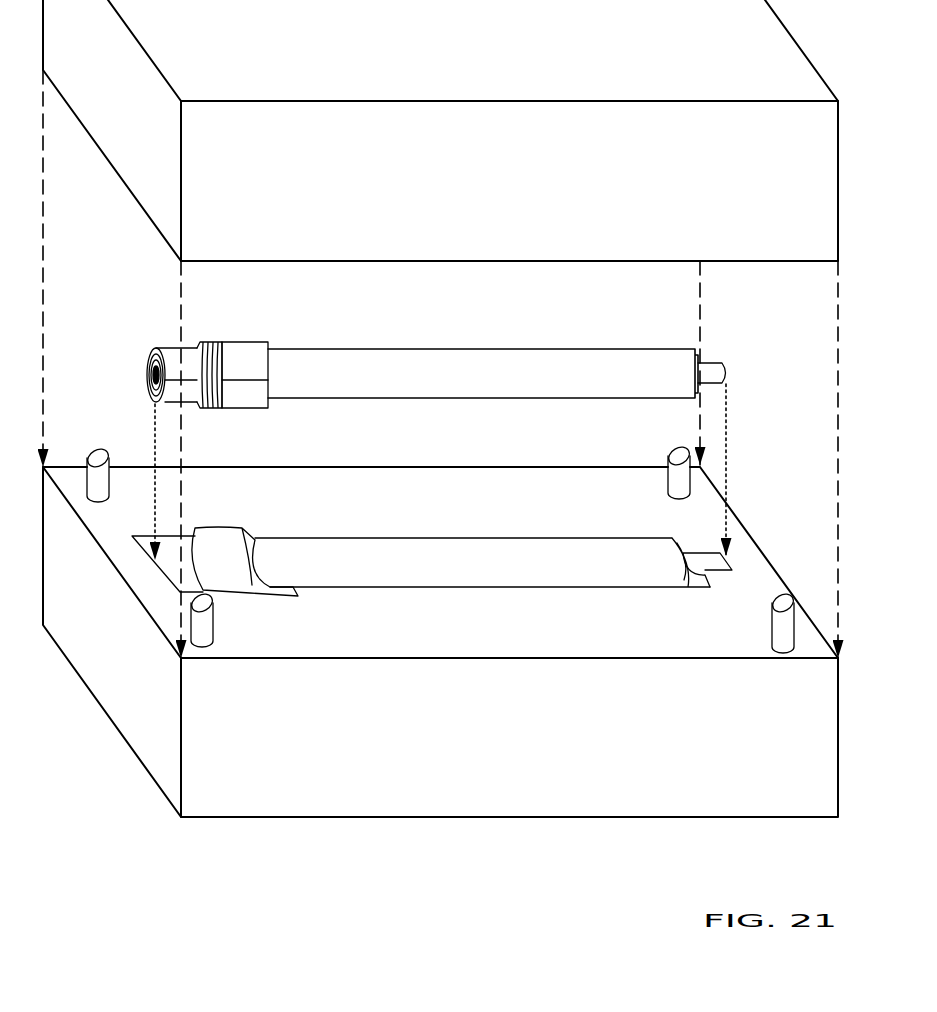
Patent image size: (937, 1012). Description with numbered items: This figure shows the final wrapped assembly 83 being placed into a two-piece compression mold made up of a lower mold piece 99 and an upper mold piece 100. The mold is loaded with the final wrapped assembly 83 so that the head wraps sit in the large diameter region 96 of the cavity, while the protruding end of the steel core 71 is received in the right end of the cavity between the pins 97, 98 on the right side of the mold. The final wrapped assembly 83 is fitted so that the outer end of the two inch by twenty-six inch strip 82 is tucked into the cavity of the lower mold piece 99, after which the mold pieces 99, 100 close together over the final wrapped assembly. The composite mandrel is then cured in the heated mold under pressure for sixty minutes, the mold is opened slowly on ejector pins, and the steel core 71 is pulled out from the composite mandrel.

The upper mold piece 100 is at (128, 185).
The lower mold piece 99 is at (128, 742).
The final wrapped assembly 83 is at (362, 336).
The 2"×26" strip 82 is at (187, 357).
The steel core 71 is at (715, 363).
The large diameter region 96 is at (215, 552).
The pin 97 is at (680, 453).
The pin 98 is at (782, 600).